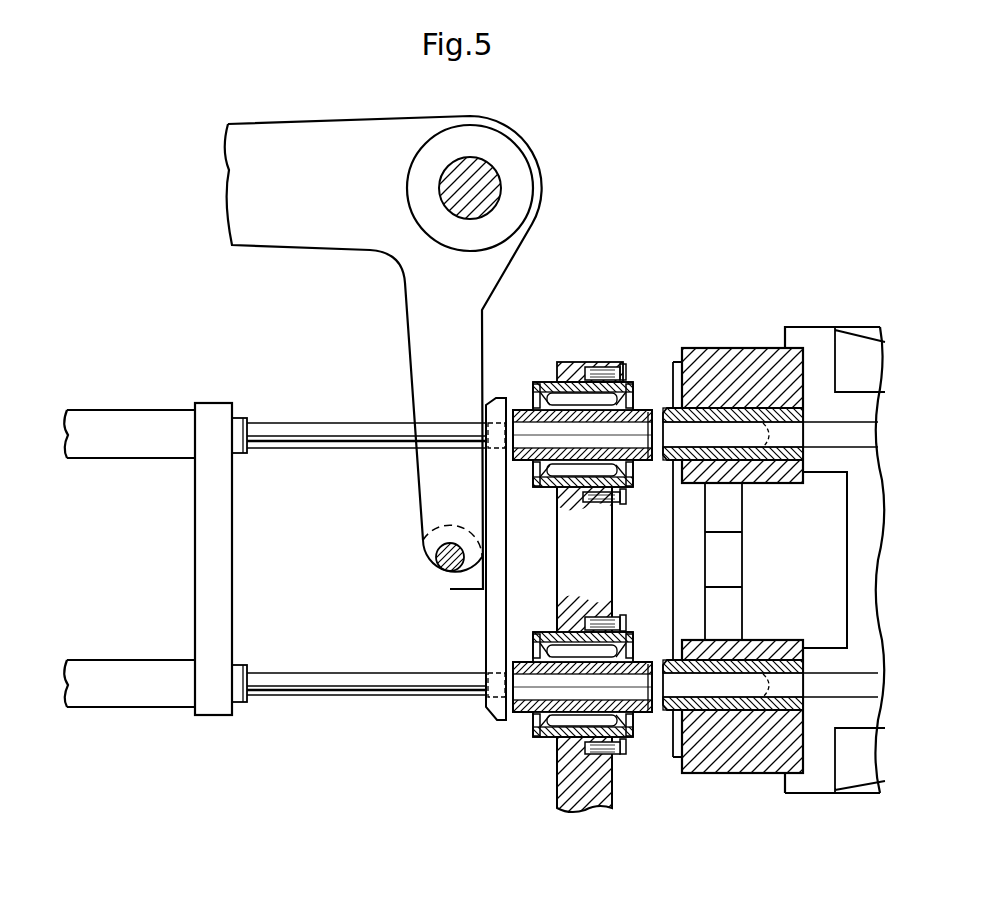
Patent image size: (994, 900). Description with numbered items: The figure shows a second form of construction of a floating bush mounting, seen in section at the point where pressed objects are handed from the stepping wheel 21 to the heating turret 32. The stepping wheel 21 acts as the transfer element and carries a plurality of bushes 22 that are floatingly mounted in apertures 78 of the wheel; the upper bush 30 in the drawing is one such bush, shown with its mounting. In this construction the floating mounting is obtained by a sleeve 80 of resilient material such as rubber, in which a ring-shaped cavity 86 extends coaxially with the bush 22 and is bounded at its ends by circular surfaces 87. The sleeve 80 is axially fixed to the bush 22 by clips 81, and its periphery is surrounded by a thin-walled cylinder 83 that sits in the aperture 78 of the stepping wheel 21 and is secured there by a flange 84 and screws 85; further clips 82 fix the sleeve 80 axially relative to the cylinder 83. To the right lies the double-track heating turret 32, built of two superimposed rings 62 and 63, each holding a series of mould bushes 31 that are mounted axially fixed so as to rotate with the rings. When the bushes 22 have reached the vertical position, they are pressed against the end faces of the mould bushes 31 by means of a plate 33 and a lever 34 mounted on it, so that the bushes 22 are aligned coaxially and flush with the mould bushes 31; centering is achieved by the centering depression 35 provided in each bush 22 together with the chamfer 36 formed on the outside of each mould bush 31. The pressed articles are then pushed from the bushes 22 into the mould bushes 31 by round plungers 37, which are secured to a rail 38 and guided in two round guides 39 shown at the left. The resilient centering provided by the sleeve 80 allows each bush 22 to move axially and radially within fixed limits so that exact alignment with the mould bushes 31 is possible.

The stepping wheel 21 is at (557, 788).
The bush 22 is at (522, 712).
The upper shaft 30 is at (517, 408).
The mould bush 31 is at (668, 420).
The heating turret 32 is at (821, 326).
The plate 33 is at (493, 712).
The lever 34 is at (417, 347).
The centering depression 35 is at (648, 410).
The chamfer 36 is at (663, 660).
The round plunger 37 is at (288, 441).
The rail 38 is at (195, 560).
The round guide 39 is at (137, 420).
The ring 62 is at (733, 362).
The ring 63 is at (731, 765).
The aperture 78 is at (582, 606).
The sleeve 80 is at (620, 503).
The clip 81 is at (533, 470).
The clip 82 is at (537, 383).
The thin-walled cylinder 83 is at (550, 380).
The flange 84 is at (613, 363).
The screw 85 is at (627, 366).
The ring-shaped cavity 86 is at (582, 474).
The circular surface 87 is at (557, 633).